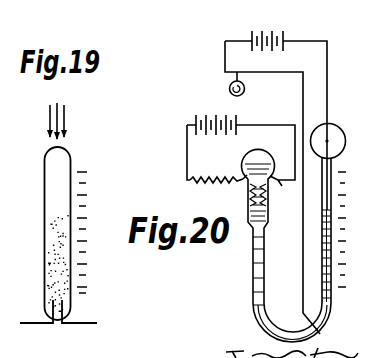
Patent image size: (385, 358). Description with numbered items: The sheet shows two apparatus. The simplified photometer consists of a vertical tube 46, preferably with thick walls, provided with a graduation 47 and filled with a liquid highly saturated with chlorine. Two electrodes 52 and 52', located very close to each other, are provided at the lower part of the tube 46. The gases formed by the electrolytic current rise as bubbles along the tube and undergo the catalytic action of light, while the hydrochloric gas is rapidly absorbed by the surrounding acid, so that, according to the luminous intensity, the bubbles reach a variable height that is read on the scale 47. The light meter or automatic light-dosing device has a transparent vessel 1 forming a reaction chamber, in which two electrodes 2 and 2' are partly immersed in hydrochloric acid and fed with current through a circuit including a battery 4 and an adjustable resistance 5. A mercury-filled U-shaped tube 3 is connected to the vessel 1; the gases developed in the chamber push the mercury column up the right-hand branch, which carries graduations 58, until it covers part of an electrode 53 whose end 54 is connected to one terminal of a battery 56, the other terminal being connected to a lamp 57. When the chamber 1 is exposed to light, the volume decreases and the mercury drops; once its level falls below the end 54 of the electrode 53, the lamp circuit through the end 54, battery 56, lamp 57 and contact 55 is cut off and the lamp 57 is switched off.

In FIG. 19, the vertical tube 46 is at (53, 163).
In FIG. 19, the graduation 47 is at (98, 232).
In FIG. 19, the electrode 52 is at (32, 311).
In FIG. 19, the electrode 52' is at (86, 311).
In FIG. 20, the vessel 1 is at (263, 162).
In FIG. 20, the electrode 2 is at (234, 189).
In FIG. 20, the electrode 2' is at (283, 189).
In FIG. 20, the U-shaped tube 3 is at (254, 268).
In FIG. 20, the battery 4 is at (241, 139).
In FIG. 20, the adjustable resistance 5 is at (216, 170).
In FIG. 20, the electrode 53 is at (331, 149).
In FIG. 20, the end of electrode 54 is at (333, 284).
In FIG. 20, the contact 55 is at (315, 331).
In FIG. 20, the battery 56 is at (276, 171).
In FIG. 20, the lamp 57 is at (250, 86).
In FIG. 20, the graduations 58 is at (341, 199).